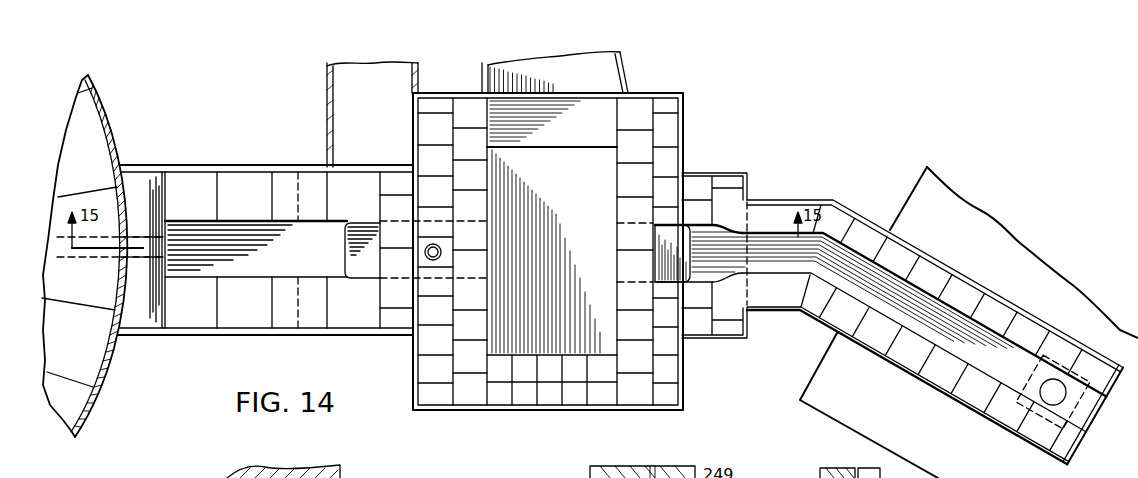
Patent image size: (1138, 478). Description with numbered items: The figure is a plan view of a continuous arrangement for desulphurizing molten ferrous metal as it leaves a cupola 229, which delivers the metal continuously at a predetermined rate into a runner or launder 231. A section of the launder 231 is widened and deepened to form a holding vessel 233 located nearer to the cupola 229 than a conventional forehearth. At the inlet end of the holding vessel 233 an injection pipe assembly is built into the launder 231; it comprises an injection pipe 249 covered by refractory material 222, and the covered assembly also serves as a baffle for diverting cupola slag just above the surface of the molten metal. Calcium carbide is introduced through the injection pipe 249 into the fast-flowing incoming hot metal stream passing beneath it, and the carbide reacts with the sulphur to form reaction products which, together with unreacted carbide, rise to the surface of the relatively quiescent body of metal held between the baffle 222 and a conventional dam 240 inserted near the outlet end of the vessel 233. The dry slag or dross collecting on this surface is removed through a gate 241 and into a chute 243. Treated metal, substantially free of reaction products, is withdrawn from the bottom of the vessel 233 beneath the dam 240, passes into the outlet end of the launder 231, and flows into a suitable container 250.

The refractory material 222 is at (467, 395).
The cupola 229 is at (108, 373).
The launder 231 is at (250, 233).
The holding vessel 233 is at (603, 395).
The dam 240 is at (827, 468).
The gate 241 is at (582, 132).
The chute 243 is at (603, 78).
The injection pipe 249 is at (432, 260).
The container 250 is at (825, 350).